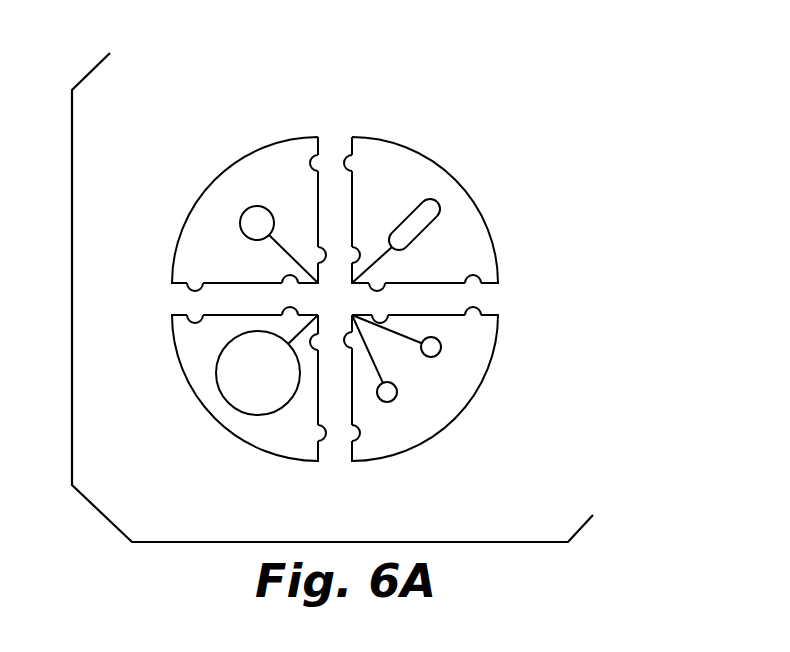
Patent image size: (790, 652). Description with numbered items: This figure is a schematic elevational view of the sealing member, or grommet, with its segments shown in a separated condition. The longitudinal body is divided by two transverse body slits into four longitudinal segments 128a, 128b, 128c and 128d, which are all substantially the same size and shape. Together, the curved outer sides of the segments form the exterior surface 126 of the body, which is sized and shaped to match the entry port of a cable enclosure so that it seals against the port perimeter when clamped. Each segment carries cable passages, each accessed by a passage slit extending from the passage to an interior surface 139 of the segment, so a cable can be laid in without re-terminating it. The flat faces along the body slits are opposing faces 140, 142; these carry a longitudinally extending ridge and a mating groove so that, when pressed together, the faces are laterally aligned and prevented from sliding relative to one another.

The exterior surface 126 is at (212, 170).
The longitudinal segment 128a is at (275, 440).
The longitudinal segment 128b is at (475, 382).
The longitudinal segment 128c is at (397, 158).
The longitudinal segment 128d is at (268, 153).
The interior surface 139 is at (456, 284).
The opposing face 140 is at (347, 138).
The opposing face 142 is at (323, 140).